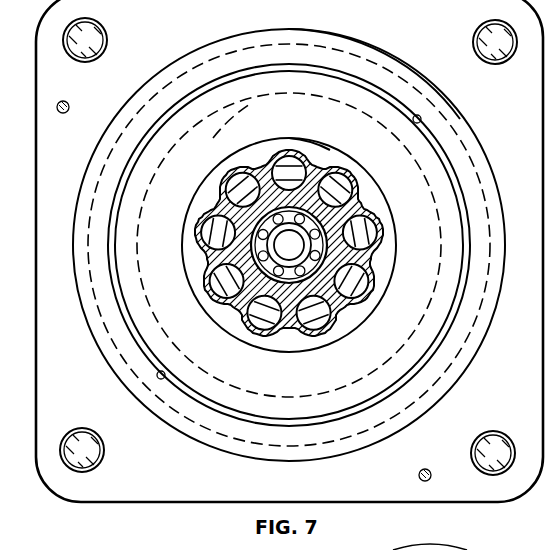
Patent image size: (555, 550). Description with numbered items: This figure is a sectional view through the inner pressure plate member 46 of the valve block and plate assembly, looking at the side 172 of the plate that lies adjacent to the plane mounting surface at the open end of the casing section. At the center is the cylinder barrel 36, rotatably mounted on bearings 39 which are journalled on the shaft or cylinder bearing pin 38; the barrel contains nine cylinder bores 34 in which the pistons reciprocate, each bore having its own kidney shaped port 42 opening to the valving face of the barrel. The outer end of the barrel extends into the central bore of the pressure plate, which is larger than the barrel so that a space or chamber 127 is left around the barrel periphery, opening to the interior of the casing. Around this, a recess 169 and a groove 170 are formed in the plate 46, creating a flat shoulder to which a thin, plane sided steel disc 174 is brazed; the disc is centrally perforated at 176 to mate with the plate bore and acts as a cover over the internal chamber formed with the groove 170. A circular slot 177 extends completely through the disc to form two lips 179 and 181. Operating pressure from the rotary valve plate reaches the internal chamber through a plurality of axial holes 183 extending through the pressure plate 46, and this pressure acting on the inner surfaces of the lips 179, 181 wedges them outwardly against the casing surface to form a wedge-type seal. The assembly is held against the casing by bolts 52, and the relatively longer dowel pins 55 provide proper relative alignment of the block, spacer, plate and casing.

The inner pressure plate member 46 is at (289, 251).
The side of the plate 172 is at (289, 240).
The recess 169 is at (455, 113).
The groove 170 is at (465, 147).
The circular slot 177 is at (147, 139).
The lip 179 is at (108, 232).
The lip 181 is at (118, 193).
The steel disc 174 is at (242, 121).
The central perforation 176 is at (330, 150).
The cylinder barrel 36 is at (295, 352).
The axial holes 183 is at (415, 121).
The cylinder bores 34 is at (335, 325).
The space or chamber 127 is at (368, 220).
The kidney shaped port 42 is at (352, 290).
The bearings 39 is at (328, 247).
The shaft or cylinder bearing pin 38 is at (289, 245).
The bolts 52 is at (288, 246).
The dowel pins 55 is at (68, 103).